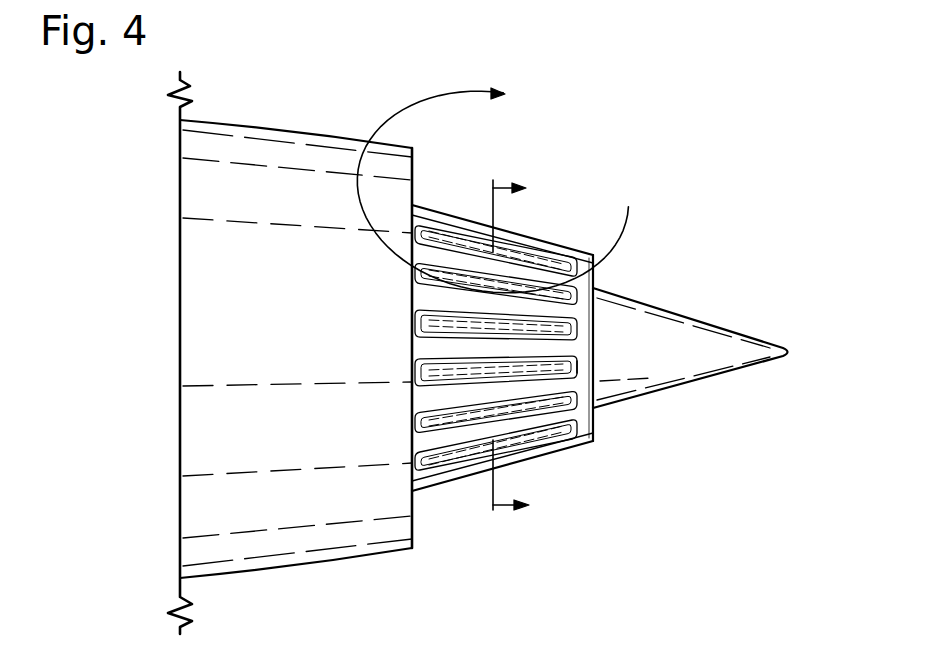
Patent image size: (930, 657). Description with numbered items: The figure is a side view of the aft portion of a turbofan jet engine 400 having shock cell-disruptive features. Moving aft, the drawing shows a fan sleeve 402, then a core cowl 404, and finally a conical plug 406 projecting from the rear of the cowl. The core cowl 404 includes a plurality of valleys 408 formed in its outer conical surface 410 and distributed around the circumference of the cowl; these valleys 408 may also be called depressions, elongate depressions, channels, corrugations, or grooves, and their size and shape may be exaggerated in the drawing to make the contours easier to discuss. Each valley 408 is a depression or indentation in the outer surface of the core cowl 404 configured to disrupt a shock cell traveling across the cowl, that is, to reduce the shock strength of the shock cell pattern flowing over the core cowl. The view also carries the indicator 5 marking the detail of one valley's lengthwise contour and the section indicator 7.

The turbofan jet engine 400 is at (104, 150).
The fan sleeve 402 is at (288, 148).
The core cowl 404 is at (433, 483).
The conical plug 406 is at (725, 375).
The valleys 408 is at (575, 330).
The conical surface 410 is at (580, 383).
The detail view indicator for FIG. 5 is at (492, 190).
The section line for FIG. 7 is at (519, 349).